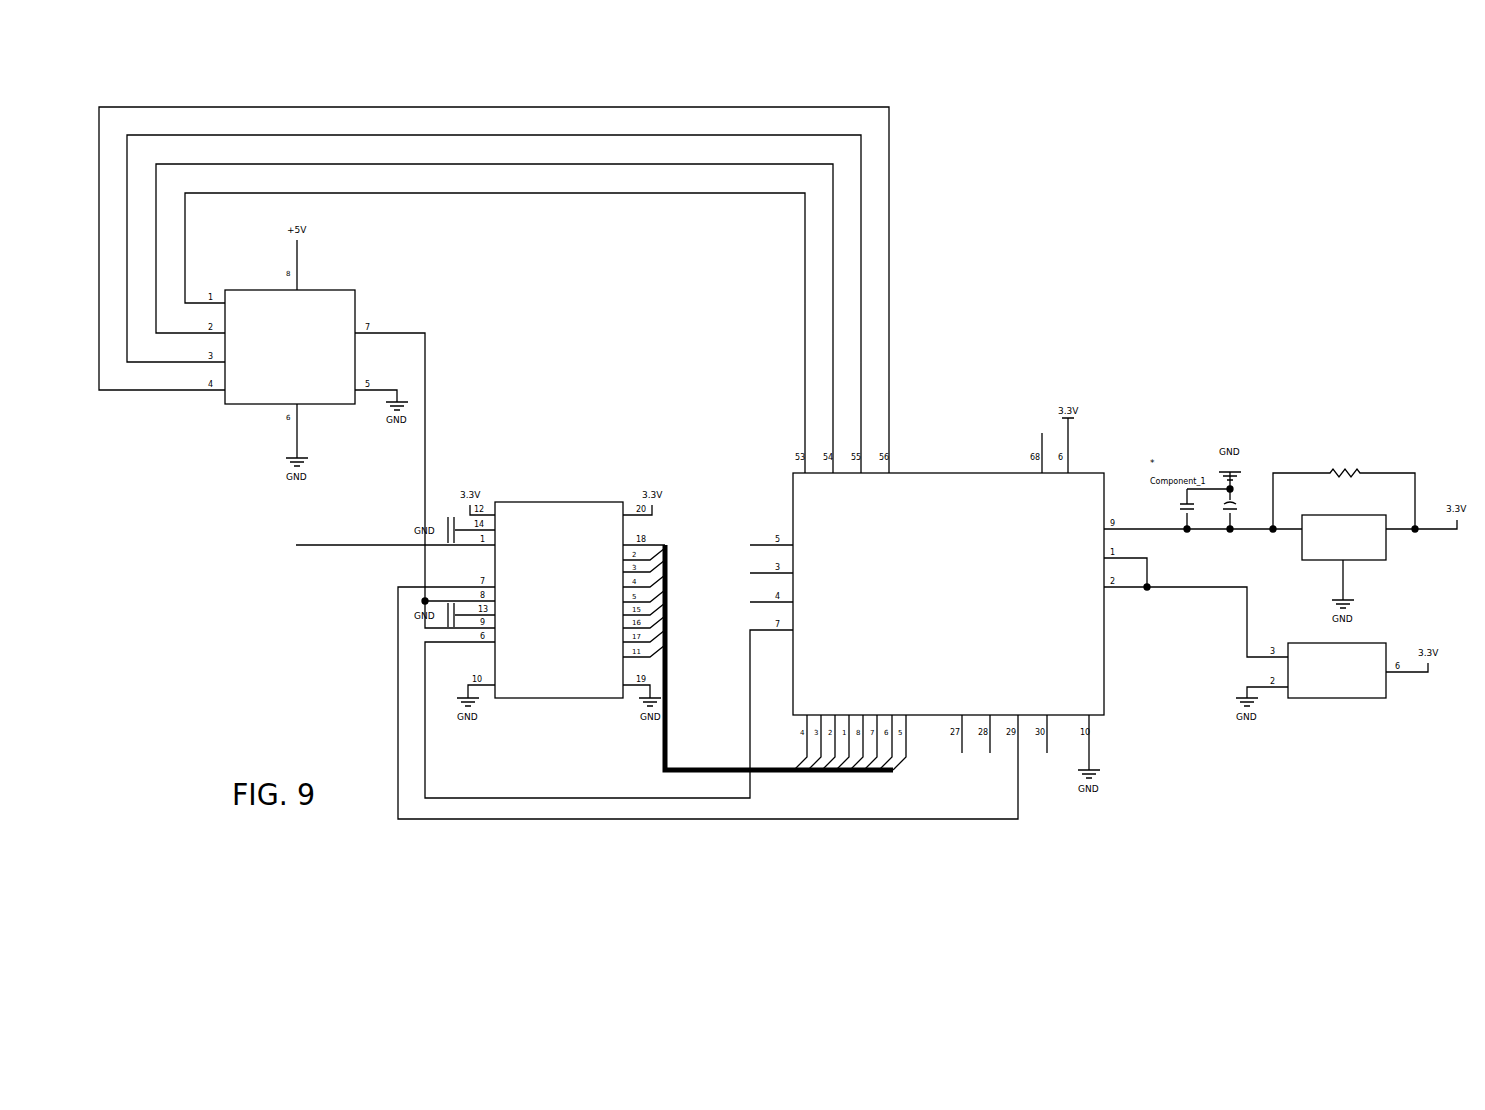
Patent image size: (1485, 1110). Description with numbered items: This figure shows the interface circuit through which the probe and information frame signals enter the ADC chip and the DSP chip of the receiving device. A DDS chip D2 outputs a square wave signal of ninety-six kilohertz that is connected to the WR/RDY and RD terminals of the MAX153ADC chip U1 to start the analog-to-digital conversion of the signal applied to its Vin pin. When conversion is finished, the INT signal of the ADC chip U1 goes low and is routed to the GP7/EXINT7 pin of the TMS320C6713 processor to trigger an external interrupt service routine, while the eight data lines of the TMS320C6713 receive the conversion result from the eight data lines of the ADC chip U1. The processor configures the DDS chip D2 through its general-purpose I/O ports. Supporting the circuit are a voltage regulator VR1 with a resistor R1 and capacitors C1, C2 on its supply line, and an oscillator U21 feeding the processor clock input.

The AD9837 direct digital synthesizer (Component_2) D2 is at (299, 335).
The MAX153ADC chip U1 is at (559, 600).
The TMS320C6713 processor TMS320C6713 is at (948, 594).
The 0.1uF capacitor C1 is at (1195, 509).
The 10uF capacitor C2 is at (1238, 509).
The resistor R1 is at (1344, 493).
The voltage regulator VR1 is at (1344, 532).
The 12 MHz oscillator U21 is at (1337, 664).